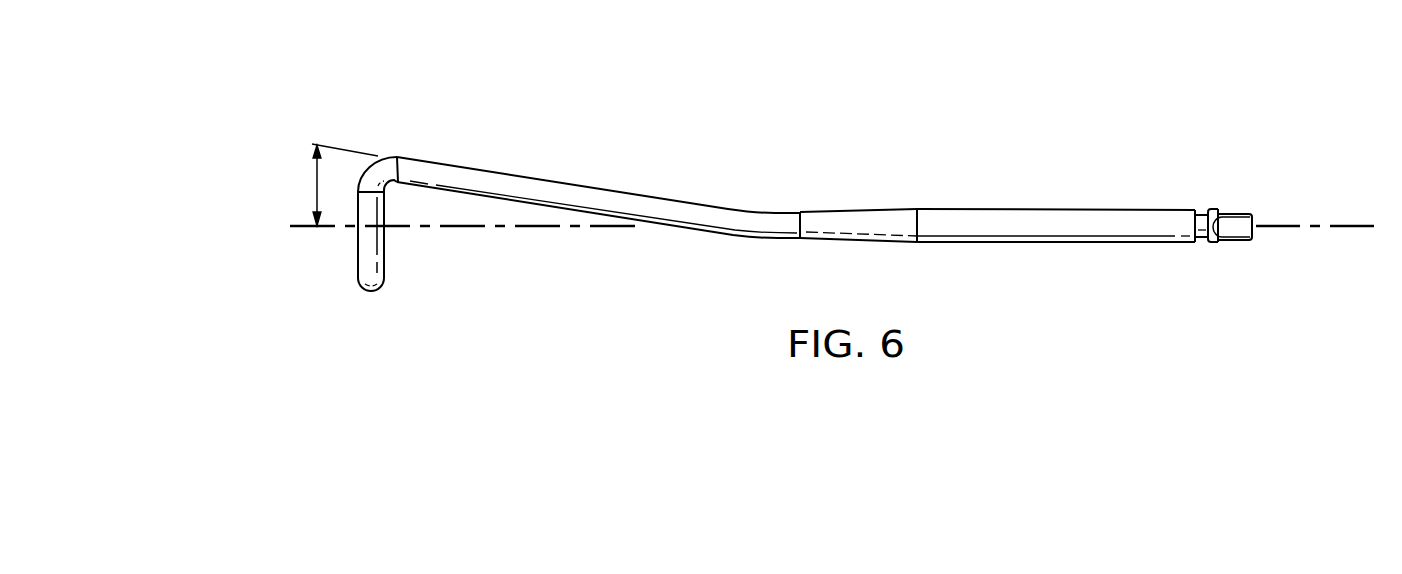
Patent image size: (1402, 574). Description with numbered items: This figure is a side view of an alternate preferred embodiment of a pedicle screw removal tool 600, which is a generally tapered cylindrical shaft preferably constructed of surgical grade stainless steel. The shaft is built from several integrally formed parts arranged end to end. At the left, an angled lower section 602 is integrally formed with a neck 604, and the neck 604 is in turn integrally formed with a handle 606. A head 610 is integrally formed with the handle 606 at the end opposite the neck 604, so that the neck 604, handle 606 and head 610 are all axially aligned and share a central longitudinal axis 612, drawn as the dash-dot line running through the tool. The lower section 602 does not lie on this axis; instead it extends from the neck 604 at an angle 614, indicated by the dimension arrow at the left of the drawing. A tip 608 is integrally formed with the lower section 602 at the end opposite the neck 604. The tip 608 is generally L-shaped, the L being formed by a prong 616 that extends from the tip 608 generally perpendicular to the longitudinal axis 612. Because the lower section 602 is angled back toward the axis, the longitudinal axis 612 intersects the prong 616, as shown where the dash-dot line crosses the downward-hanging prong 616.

The pedicle screw removal tool 600 is at (712, 101).
The angled lower section 602 is at (577, 182).
The neck 604 is at (860, 211).
The handle 606 is at (1057, 209).
The tip 608 is at (361, 166).
The head 610 is at (1233, 212).
The central longitudinal axis 612 is at (1348, 228).
The angle 614 is at (317, 185).
The prong 616 is at (367, 253).